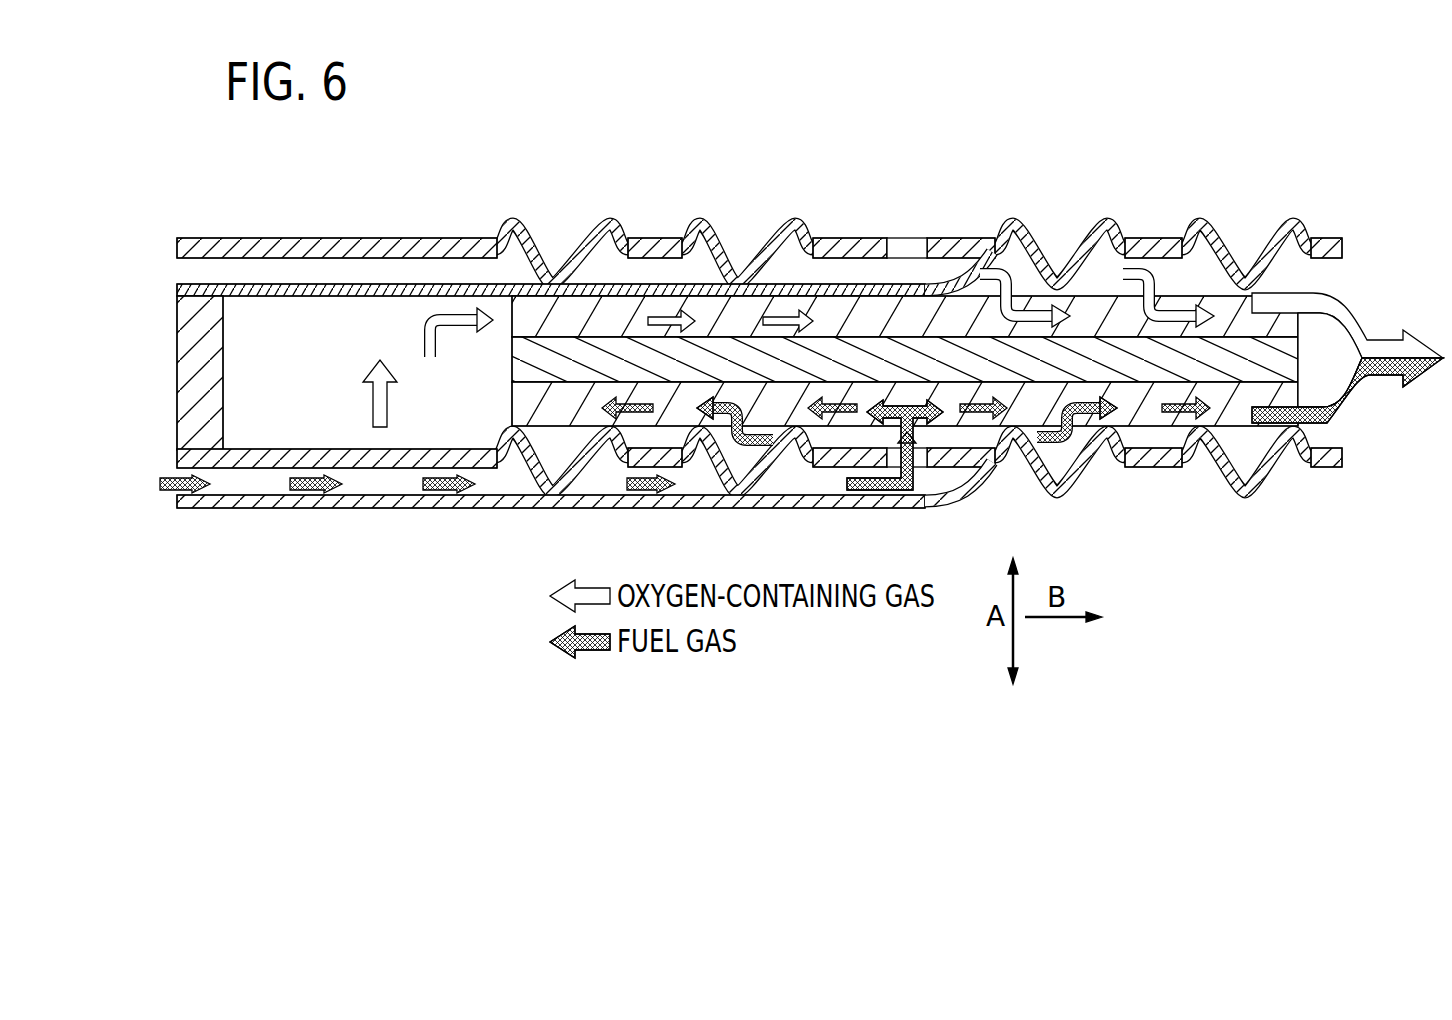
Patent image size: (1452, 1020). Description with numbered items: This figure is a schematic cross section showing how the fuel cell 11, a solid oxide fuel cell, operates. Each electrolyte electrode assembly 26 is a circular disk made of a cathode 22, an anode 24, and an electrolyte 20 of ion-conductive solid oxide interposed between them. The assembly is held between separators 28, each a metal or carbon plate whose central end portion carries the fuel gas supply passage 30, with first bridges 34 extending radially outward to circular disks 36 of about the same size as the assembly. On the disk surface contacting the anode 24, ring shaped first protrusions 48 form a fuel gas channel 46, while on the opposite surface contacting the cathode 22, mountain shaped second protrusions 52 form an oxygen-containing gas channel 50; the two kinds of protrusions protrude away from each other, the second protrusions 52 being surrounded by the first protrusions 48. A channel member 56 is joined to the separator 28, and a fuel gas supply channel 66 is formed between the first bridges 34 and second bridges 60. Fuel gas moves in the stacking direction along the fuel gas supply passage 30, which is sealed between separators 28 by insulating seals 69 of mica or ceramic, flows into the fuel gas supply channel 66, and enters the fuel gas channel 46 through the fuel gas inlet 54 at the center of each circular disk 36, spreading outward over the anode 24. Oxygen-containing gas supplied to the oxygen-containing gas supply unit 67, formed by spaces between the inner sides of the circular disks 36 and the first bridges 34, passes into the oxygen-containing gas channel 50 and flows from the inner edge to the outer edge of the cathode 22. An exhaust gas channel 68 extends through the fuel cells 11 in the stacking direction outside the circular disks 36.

The fuel cell 11 is at (524, 142).
The electrolyte 20 is at (905, 430).
The cathode 22 is at (1190, 421).
The anode 24 is at (1133, 407).
The electrolyte electrode assembly 26 is at (1215, 516).
The separator 28 is at (1346, 212).
The fuel gas supply passage 30 is at (153, 413).
The first bridges 34 is at (257, 239).
The circular disks 36 is at (1152, 230).
The fuel gas channel 46 is at (991, 464).
The first protrusions 48 is at (700, 226).
The oxygen-containing gas channel 50 is at (1031, 285).
The second protrusions 52 is at (1114, 257).
The fuel gas inlet 54 is at (917, 461).
The channel member 56 is at (313, 299).
The second bridges 60 is at (264, 297).
The fuel gas supply channel 66 is at (332, 281).
The oxygen-containing gas supply unit 67 is at (283, 413).
The exhaust gas channel 68 is at (1363, 341).
The insulating seals 69 is at (203, 371).